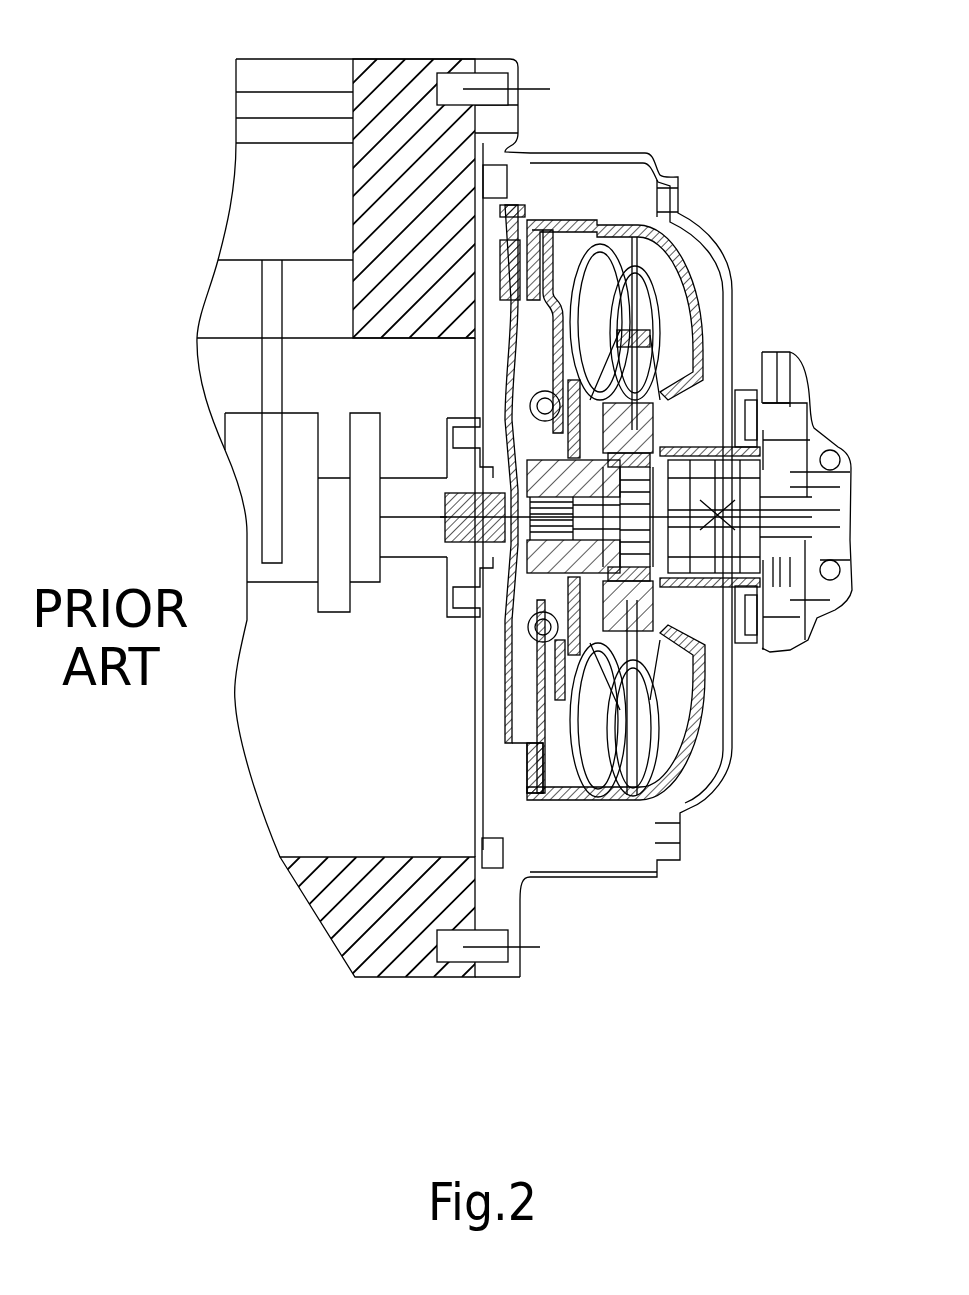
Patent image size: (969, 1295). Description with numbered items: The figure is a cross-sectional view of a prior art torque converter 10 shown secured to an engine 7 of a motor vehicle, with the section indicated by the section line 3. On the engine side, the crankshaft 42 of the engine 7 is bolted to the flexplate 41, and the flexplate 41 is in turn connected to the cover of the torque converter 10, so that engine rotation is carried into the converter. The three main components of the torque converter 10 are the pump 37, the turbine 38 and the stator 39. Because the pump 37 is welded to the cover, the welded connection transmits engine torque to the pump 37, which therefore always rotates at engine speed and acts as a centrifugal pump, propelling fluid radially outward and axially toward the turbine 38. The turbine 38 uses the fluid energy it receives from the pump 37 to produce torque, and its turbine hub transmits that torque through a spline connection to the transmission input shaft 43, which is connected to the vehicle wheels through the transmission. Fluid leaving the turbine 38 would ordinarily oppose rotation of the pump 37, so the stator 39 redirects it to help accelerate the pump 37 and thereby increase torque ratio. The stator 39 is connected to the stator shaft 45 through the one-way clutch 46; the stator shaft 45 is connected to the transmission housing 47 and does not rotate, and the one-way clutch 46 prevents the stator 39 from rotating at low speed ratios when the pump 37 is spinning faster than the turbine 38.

The section line 3- 3 is at (495, 200).
The engine 7 is at (482, 885).
The torque converter 10 is at (697, 268).
The pump 37 is at (693, 765).
The turbine 38 is at (570, 767).
The stator 39 is at (613, 672).
The flexplate 41 is at (492, 658).
The crankshaft 42 is at (432, 563).
The transmission input shaft 43 is at (790, 537).
The stator shaft 45 is at (505, 465).
The one-way clutch 46 is at (672, 620).
The transmission housing 47 is at (787, 467).